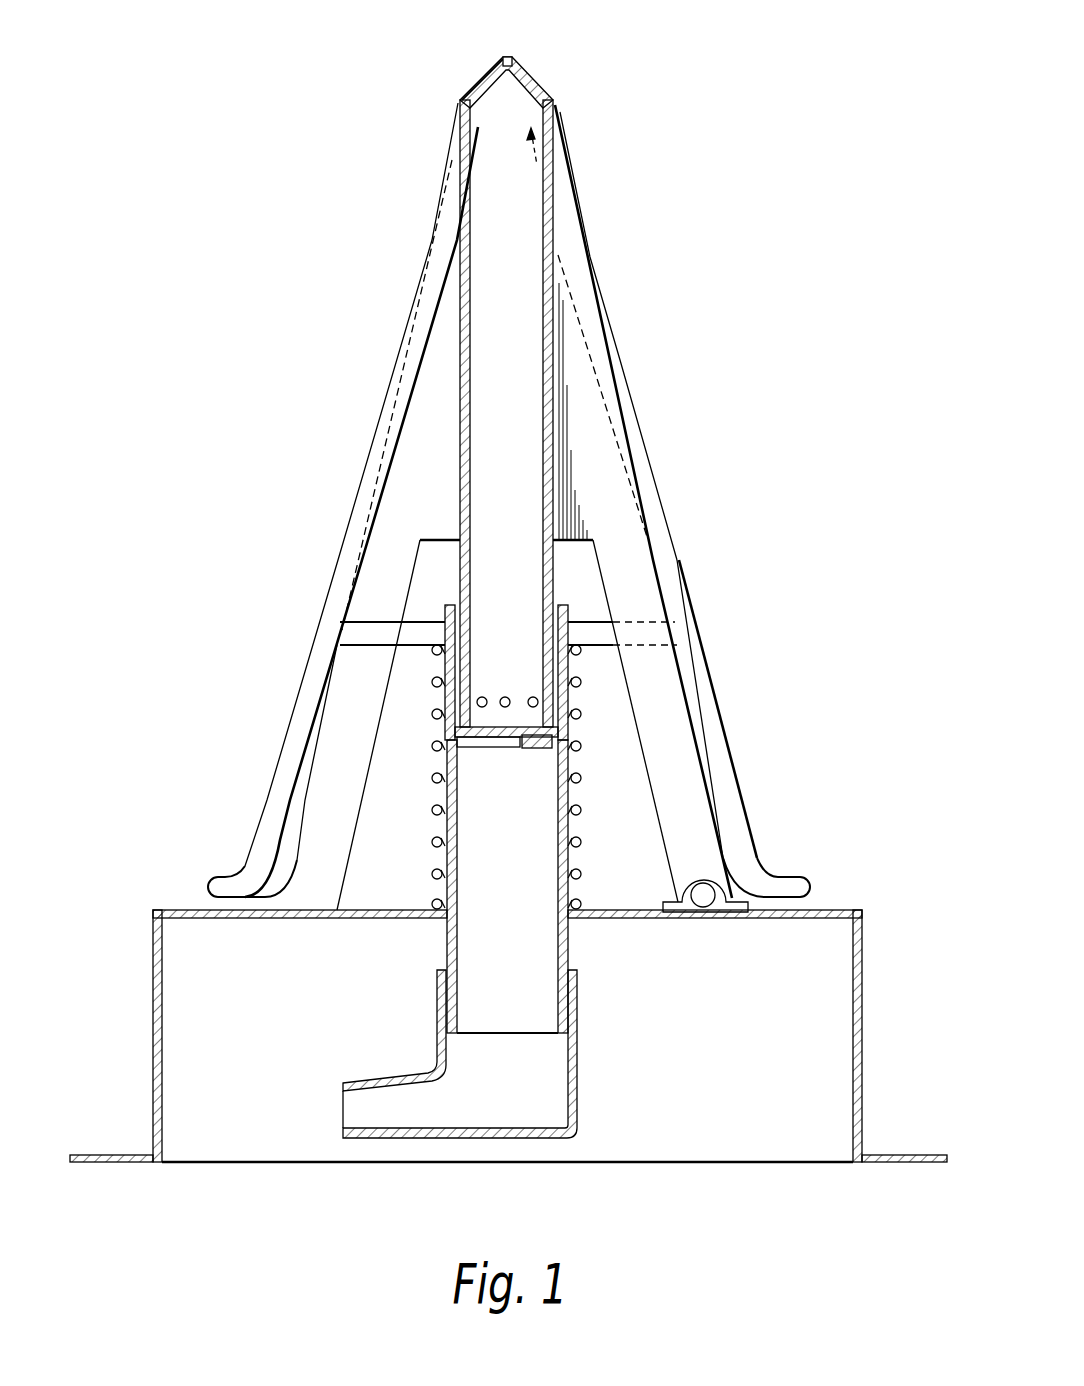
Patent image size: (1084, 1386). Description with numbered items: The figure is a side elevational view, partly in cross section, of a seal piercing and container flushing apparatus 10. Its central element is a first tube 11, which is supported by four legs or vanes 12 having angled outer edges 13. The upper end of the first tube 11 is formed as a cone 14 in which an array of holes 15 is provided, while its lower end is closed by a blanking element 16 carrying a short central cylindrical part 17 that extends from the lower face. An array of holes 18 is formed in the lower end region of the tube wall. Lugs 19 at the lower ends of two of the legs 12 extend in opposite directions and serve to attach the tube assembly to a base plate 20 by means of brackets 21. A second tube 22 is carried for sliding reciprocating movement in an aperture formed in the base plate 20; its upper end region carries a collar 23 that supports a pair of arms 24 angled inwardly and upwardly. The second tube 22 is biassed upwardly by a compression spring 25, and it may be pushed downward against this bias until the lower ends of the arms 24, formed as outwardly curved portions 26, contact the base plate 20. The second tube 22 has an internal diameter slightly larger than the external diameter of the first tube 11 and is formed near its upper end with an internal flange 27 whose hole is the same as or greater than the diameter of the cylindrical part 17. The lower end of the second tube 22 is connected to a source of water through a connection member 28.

The seal piercing and container flushing apparatus 10 is at (702, 398).
The first tube 11 is at (513, 210).
The legs or vanes 12 is at (422, 480).
The angled outer edges 13 is at (602, 340).
The cone 14 is at (480, 75).
The holes 15 is at (507, 55).
The blanking element 16 is at (517, 730).
The central cylindrical part 17 is at (502, 742).
The holes 18 is at (533, 697).
The lugs 19 is at (705, 900).
The base plate 20 is at (175, 910).
The brackets 21 is at (686, 885).
The second tube 22 is at (468, 853).
The collar 23 is at (590, 635).
The arms 24 is at (345, 537).
The compression spring 25 is at (433, 815).
The outwardly curved portions 26 is at (212, 880).
The internal flange 27 is at (537, 748).
The connection member 28 is at (375, 1105).